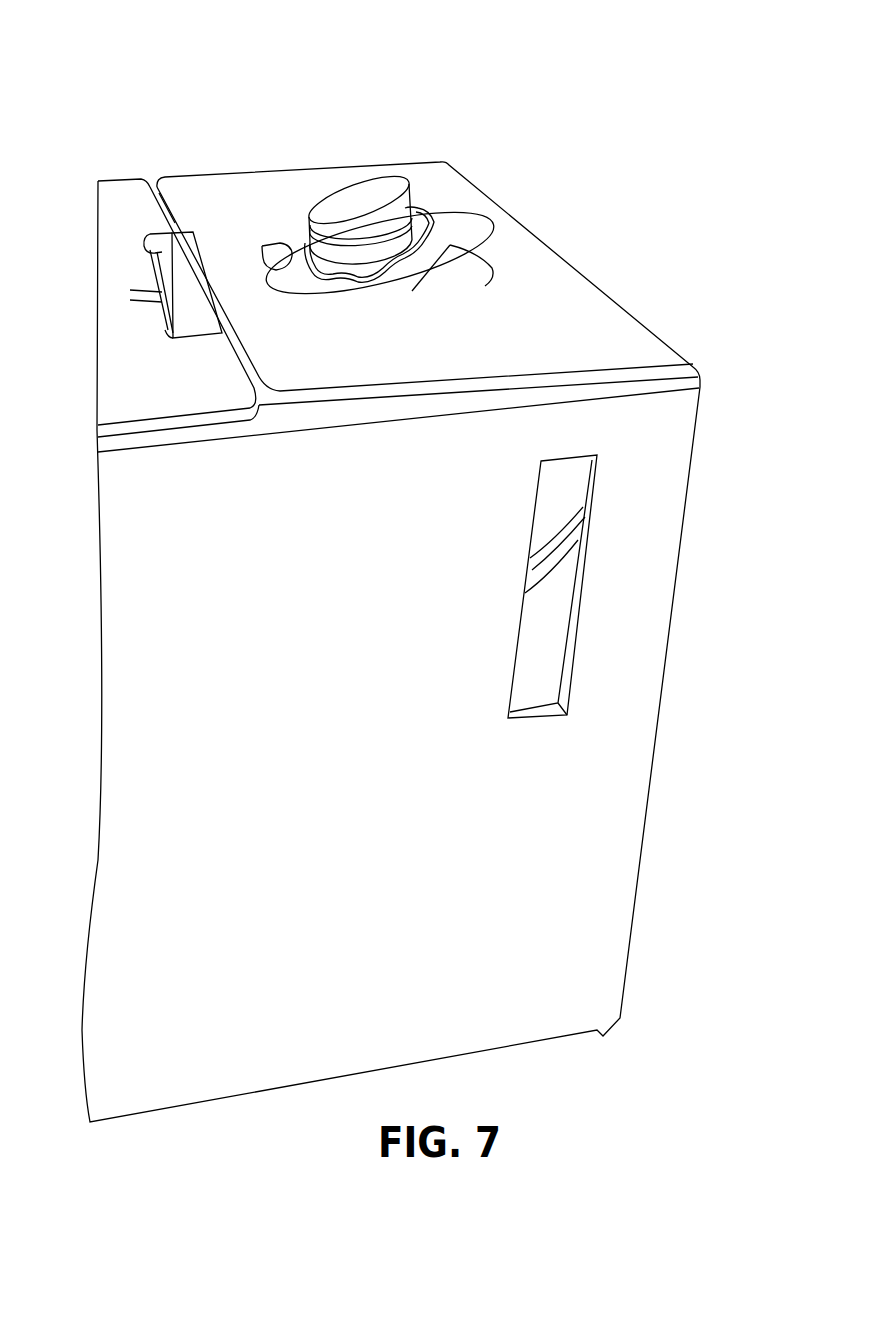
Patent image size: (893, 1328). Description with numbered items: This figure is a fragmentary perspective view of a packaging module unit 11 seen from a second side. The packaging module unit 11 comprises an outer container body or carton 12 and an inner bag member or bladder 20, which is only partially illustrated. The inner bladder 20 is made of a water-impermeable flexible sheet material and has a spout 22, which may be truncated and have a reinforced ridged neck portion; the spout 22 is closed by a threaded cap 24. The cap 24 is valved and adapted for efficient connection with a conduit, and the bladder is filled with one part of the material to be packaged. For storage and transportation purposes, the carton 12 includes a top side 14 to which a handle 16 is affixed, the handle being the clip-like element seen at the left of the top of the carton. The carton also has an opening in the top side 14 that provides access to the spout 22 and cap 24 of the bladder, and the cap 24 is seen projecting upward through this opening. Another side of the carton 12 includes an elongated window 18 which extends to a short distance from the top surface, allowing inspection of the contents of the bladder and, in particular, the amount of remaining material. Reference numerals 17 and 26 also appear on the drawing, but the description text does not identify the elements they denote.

The packaging module unit 11 is at (249, 80).
The outer container body or carton 12 is at (692, 523).
The top side 14 is at (597, 323).
The handle 16 is at (172, 247).
The recess pocket 17 is at (262, 246).
The elongated window 18 is at (590, 468).
The inner bag member or bladder 20 is at (486, 256).
The spout 22 is at (427, 227).
The threaded cap 24 is at (350, 258).
The cap top 26 is at (381, 190).